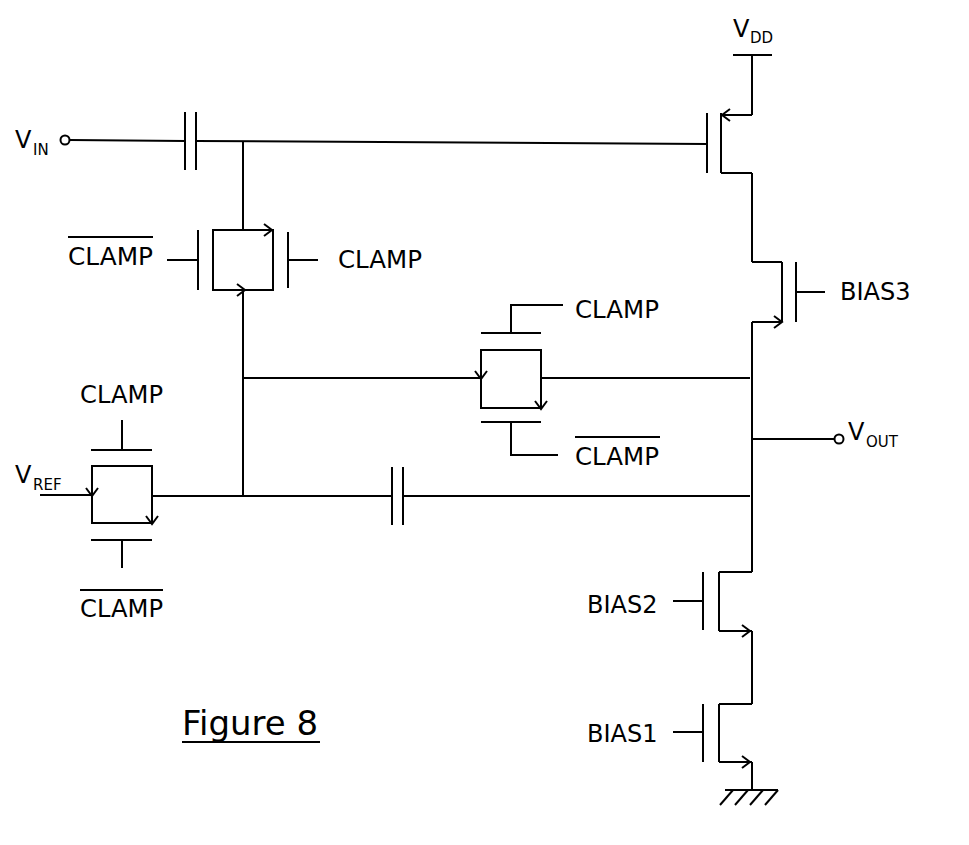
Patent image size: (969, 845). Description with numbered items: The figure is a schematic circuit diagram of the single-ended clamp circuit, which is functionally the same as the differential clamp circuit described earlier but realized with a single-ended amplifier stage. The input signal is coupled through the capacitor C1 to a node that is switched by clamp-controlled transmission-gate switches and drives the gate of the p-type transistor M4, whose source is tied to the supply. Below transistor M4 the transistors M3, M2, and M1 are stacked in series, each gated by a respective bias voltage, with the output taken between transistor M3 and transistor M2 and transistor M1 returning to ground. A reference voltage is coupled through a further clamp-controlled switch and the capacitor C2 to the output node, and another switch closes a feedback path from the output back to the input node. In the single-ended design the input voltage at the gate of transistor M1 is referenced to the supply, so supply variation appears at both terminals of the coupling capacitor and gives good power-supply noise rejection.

The capacitor C1 is at (191, 120).
The capacitor C2 is at (399, 519).
The transistor M1 is at (727, 736).
The transistor M2 is at (727, 604).
The transistor M3 is at (768, 295).
The transistor M4 is at (746, 141).